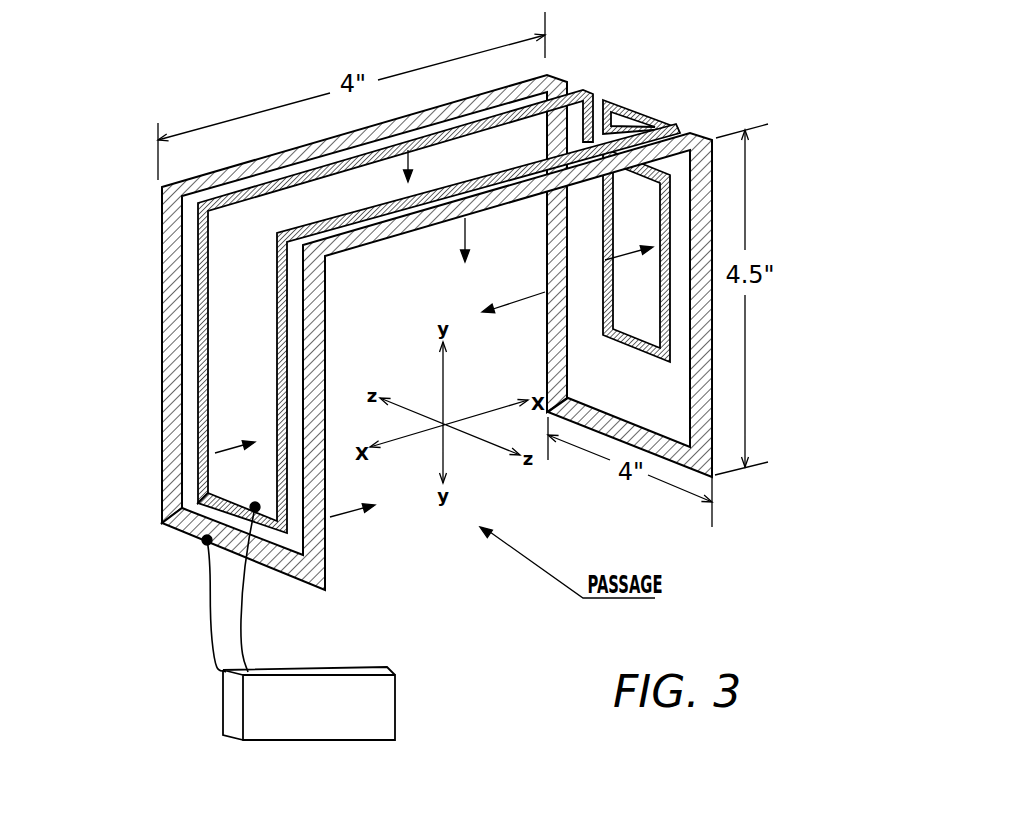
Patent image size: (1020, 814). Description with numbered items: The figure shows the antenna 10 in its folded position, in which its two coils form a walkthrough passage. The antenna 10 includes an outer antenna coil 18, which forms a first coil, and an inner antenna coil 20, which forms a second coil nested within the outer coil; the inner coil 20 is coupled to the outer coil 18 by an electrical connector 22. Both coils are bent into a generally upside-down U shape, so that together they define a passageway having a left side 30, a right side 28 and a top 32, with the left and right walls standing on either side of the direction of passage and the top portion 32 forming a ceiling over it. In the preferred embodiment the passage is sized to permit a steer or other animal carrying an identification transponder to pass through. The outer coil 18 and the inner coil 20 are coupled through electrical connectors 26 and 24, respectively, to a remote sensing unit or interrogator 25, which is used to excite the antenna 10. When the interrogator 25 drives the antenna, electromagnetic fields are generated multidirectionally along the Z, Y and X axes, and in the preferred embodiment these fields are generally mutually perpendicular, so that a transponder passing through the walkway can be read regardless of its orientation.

The antenna 10 is at (442, 295).
The outer antenna coil 18 is at (550, 73).
The inner antenna coil 20 is at (633, 110).
The electrical connector 22 is at (162, 523).
The electrical connector 24 is at (240, 596).
The interrogator 25 is at (395, 702).
The electrical connector 26 is at (207, 600).
The right side wall 28 is at (716, 112).
The left wall 30 is at (140, 305).
The top portion 32 is at (430, 88).